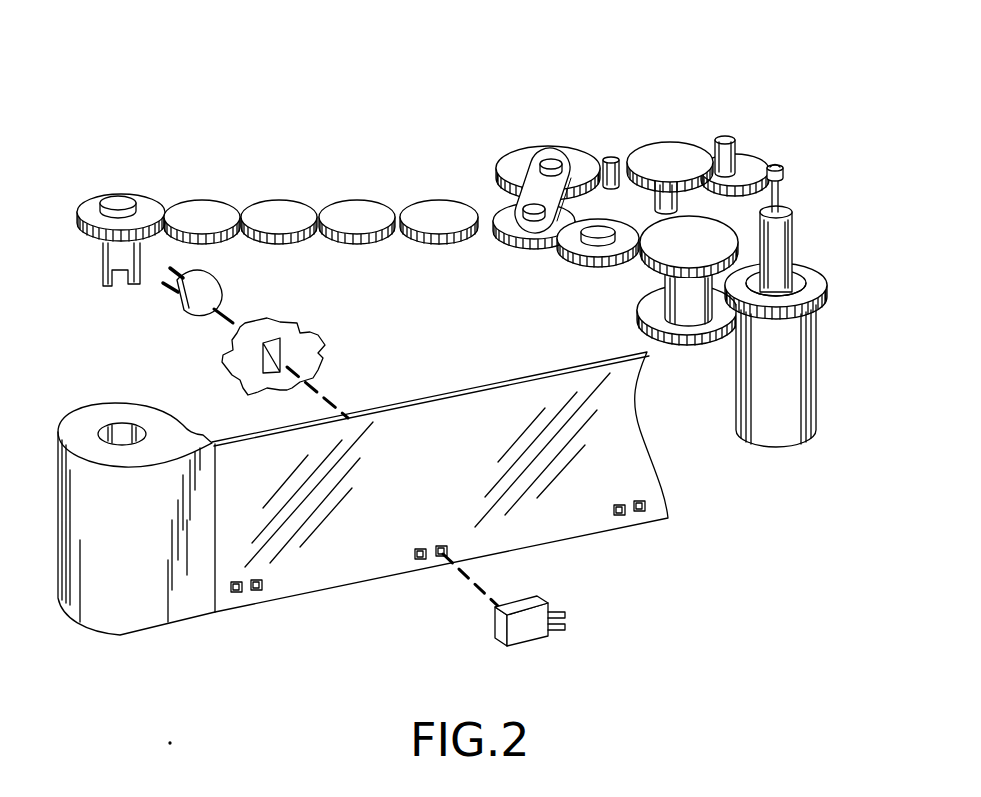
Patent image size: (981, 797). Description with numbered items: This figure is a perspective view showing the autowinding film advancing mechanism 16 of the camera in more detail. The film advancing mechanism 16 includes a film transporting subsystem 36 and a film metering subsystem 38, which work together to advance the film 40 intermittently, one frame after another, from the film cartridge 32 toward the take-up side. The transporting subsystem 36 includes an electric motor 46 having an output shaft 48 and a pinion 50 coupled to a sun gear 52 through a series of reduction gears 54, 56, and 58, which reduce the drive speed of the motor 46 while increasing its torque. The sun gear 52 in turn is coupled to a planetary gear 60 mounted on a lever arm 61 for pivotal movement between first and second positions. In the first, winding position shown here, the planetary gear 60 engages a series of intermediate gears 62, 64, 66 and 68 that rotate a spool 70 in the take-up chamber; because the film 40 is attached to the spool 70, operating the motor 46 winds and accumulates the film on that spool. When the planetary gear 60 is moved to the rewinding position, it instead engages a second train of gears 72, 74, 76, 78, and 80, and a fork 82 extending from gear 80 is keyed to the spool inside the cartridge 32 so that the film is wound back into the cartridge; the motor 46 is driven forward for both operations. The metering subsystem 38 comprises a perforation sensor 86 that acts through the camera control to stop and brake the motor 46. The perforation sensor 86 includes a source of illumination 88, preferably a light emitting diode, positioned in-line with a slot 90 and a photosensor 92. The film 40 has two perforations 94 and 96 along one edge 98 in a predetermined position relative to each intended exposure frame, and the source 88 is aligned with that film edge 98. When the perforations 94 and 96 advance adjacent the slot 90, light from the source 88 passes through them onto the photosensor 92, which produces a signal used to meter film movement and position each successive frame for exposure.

The film advancing mechanism 16 is at (333, 70).
The film cartridge 32 is at (130, 628).
The film transporting subsystem 36 is at (418, 240).
The film metering subsystem 38 is at (363, 511).
The film 40 is at (488, 396).
The electric motor 46 is at (801, 191).
The output shaft 48 is at (780, 196).
The pinion 50 is at (778, 166).
The sun gear 52 is at (548, 147).
The reduction gear 54 is at (728, 138).
The reduction gear 56 is at (672, 142).
The reduction gear 58 is at (612, 158).
The planetary gear 60 is at (520, 248).
The lever arm 61 is at (570, 158).
The intermediate gear 62 is at (582, 262).
The intermediate gear 64 is at (645, 268).
The intermediate gear 66 is at (706, 338).
The intermediate gear 68 is at (826, 278).
The spool 70 is at (763, 448).
The rewinding gear 72 is at (442, 200).
The rewinding gear 74 is at (360, 200).
The rewinding gear 76 is at (282, 200).
The rewinding gear 78 is at (205, 200).
The rewinding gear 80 is at (116, 223).
The fork 82 is at (118, 262).
The perforation sensor 86 is at (526, 658).
The source of illumination 88 is at (192, 318).
The slot 90 is at (243, 383).
The photosensor 92 is at (522, 650).
The perforation 94 is at (447, 556).
The perforation 96 is at (420, 560).
The film edge 98 is at (333, 585).